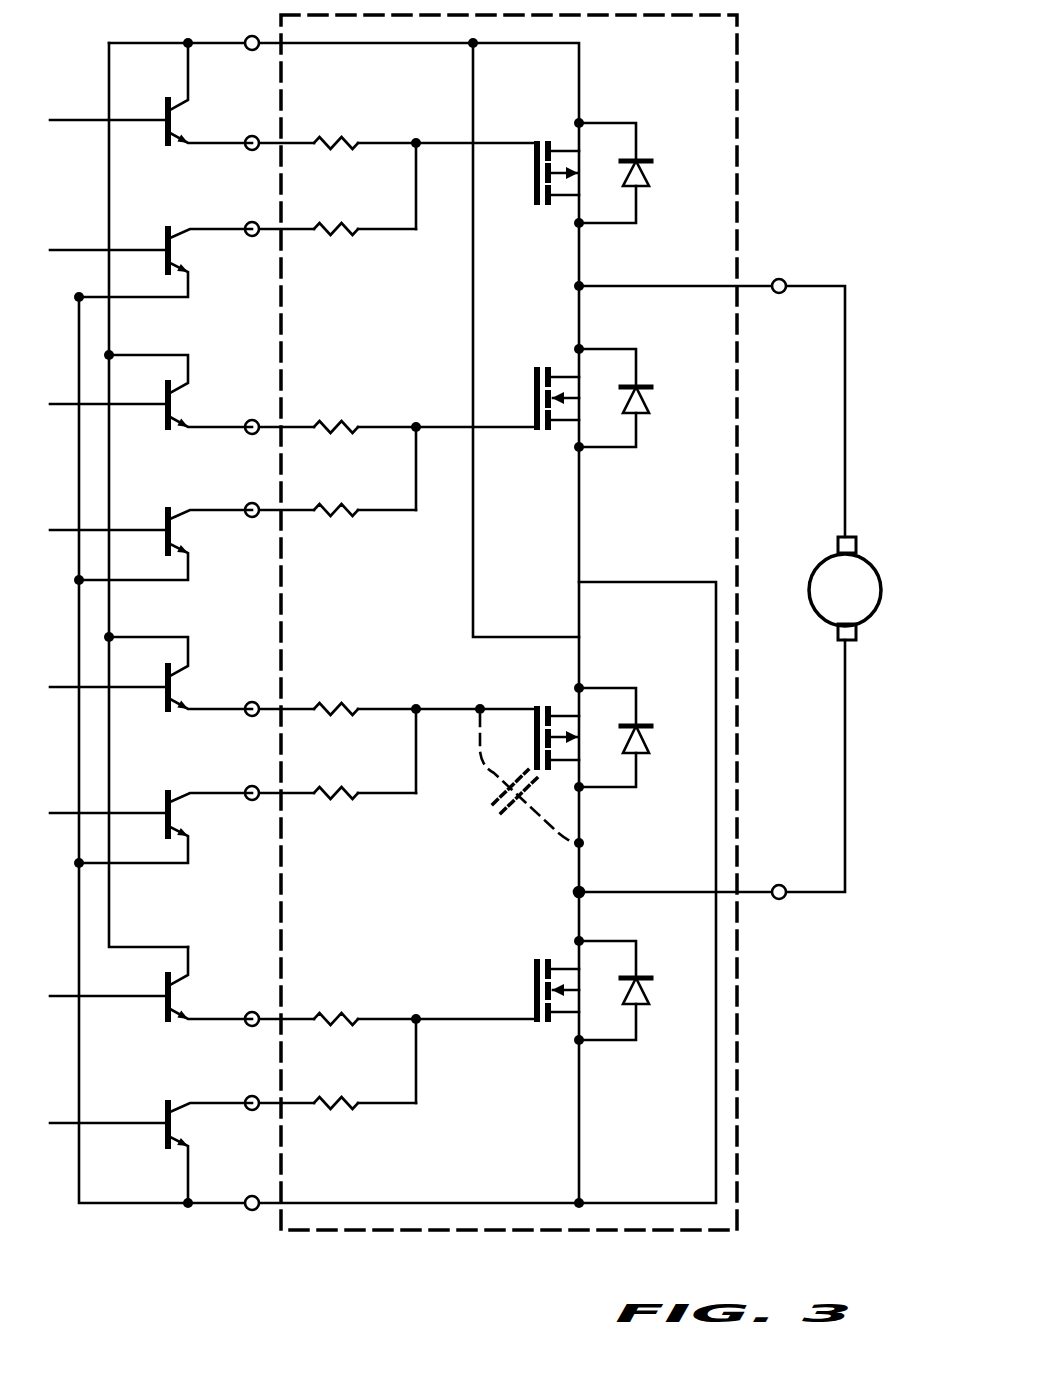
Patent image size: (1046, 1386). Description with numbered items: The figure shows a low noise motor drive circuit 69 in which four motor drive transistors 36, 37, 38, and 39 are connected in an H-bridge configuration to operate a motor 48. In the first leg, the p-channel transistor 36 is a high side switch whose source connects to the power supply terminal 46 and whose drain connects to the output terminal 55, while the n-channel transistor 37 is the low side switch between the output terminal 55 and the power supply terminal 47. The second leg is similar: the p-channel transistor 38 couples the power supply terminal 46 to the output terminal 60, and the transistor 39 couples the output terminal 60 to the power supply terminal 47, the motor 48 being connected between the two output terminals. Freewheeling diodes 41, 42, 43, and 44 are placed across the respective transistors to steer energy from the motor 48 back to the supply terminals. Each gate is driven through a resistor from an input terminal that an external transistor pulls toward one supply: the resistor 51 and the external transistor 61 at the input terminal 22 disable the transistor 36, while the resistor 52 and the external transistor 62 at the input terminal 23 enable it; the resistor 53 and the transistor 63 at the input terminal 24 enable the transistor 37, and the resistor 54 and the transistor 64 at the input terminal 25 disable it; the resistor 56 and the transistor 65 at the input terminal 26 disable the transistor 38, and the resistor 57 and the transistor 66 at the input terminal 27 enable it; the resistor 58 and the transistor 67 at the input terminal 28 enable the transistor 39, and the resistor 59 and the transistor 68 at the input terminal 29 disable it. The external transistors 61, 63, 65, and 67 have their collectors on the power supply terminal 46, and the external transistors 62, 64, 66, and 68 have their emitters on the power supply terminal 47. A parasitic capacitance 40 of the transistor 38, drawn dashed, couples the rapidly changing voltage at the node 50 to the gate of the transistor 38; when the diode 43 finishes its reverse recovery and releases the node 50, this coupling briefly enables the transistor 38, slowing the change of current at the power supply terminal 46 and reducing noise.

The input terminal 22 is at (251, 136).
The input terminal 23 is at (250, 240).
The input terminal 24 is at (251, 420).
The input terminal 25 is at (250, 524).
The input terminal 26 is at (251, 702).
The input terminal 27 is at (250, 806).
The input terminal 28 is at (251, 1012).
The input terminal 29 is at (250, 1114).
The motor drive transistor 36 is at (528, 188).
The motor drive transistor 37 is at (528, 387).
The motor drive transistor 38 is at (542, 706).
The motor drive transistor 39 is at (528, 979).
The parasitic capacitance 40 is at (490, 806).
The freewheeling diode 41 is at (653, 172).
The freewheeling diode 42 is at (653, 398).
The freewheeling diode 43 is at (653, 735).
The freewheeling diode 44 is at (653, 988).
The power supply terminal 46 is at (251, 36).
The power supply terminal 47 is at (250, 1212).
The motor 48 is at (812, 569).
The node 50 is at (583, 891).
The resistor 51 is at (336, 133).
The resistor 52 is at (337, 241).
The resistor 53 is at (336, 416).
The resistor 54 is at (337, 522).
The output terminal 55 is at (784, 281).
The resistor 56 is at (336, 699).
The resistor 57 is at (337, 804).
The resistor 58 is at (336, 1009).
The resistor 59 is at (337, 1112).
The output terminal 60 is at (781, 899).
The external transistor 61 is at (163, 133).
The external transistor 62 is at (162, 239).
The external transistor 63 is at (163, 418).
The external transistor 64 is at (162, 520).
The external transistor 65 is at (163, 701).
The external transistor 66 is at (162, 803).
The external transistor 67 is at (163, 1011).
The external transistor 68 is at (162, 1110).
The motor drive circuit 69 is at (745, 93).